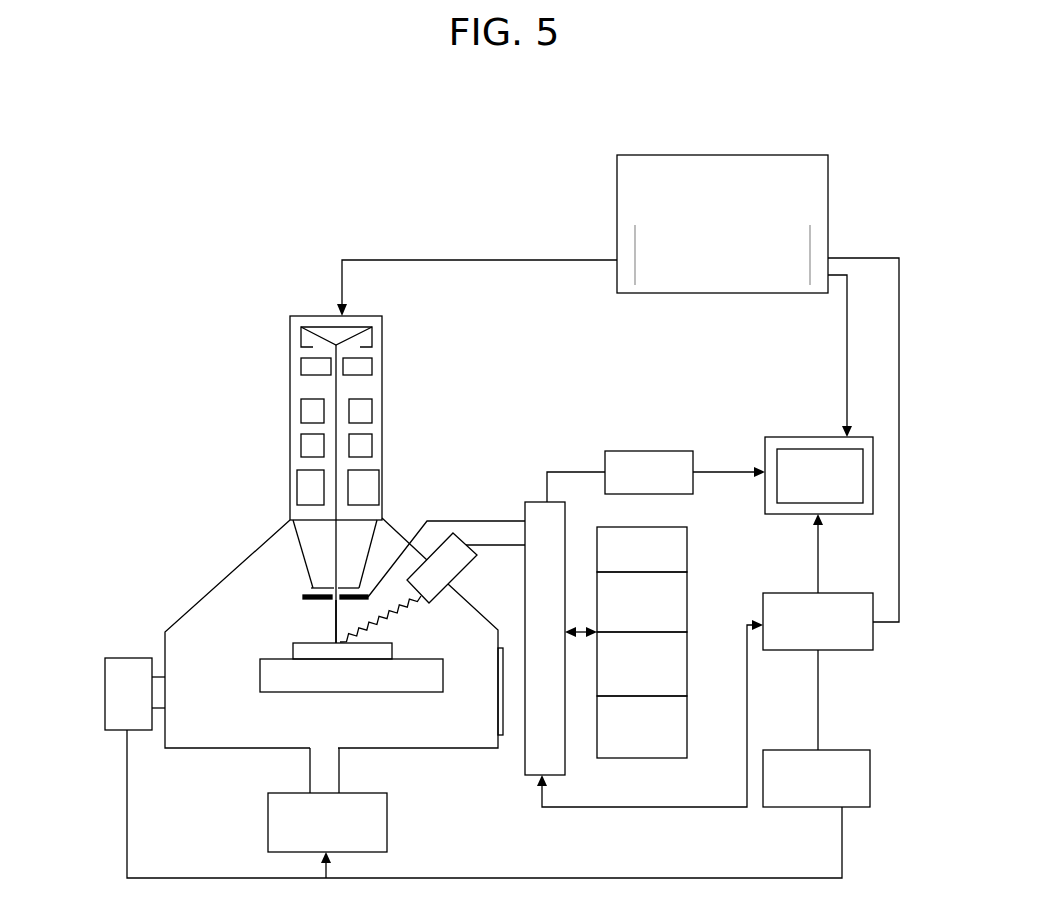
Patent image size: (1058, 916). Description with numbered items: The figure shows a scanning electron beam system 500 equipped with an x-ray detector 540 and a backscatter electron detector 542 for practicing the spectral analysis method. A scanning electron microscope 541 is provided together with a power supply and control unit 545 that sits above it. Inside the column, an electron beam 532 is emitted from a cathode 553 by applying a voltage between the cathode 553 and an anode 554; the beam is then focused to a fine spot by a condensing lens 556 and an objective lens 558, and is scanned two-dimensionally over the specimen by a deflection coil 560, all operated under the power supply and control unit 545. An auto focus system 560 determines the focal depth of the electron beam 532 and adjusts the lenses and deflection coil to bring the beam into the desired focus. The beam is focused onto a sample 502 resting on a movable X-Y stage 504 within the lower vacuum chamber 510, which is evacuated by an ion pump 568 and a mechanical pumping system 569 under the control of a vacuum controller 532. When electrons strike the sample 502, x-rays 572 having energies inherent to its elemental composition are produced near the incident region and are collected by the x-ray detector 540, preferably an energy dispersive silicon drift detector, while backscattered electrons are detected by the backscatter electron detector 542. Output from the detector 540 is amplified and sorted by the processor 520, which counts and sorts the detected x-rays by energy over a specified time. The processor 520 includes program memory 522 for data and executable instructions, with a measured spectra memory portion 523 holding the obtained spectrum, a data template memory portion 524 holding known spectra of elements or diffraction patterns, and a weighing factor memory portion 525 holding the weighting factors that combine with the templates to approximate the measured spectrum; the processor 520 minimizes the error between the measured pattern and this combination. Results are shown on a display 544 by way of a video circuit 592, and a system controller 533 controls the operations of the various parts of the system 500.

The scanning electron beam system 500 is at (246, 242).
The power supply and control unit 545 is at (790, 155).
The auto focus system 560 is at (810, 245).
The cathode 553 is at (336, 327).
The scanning electron microscope 541 is at (376, 302).
The anode 554 is at (302, 362).
The condensing lens 556 is at (303, 402).
The objective lens 558 is at (300, 477).
The backscatter electron detector 542 is at (310, 597).
The electron beam 532 is at (334, 628).
The sample 502 is at (305, 653).
The movable X-Y stage 504 is at (425, 679).
The x-rays 572 is at (393, 612).
The x-ray detector 540 is at (464, 571).
The processor 520 is at (543, 500).
The video circuit 592 is at (672, 451).
The display 544 is at (819, 475).
The program memory 522 is at (682, 550).
The measured spectra memory portion 523 is at (682, 591).
The data template memory portion 524 is at (682, 655).
The weighing factor memory portion 525 is at (682, 716).
The system controller 533 is at (837, 593).
The ion pump 568 is at (135, 694).
The vacuum chamber 510 is at (207, 740).
The mechanical pumping system 569 is at (268, 820).